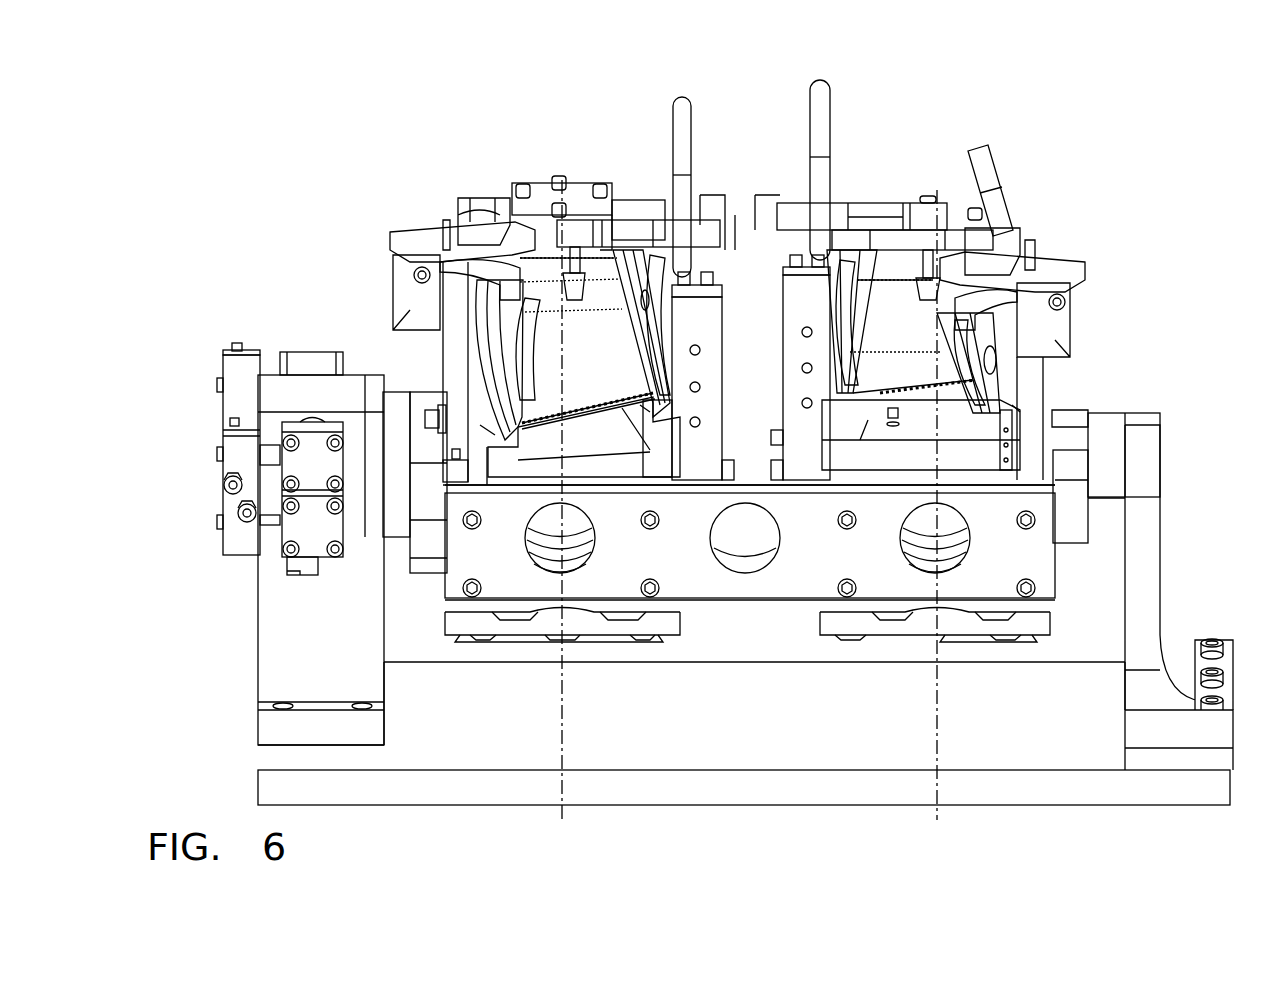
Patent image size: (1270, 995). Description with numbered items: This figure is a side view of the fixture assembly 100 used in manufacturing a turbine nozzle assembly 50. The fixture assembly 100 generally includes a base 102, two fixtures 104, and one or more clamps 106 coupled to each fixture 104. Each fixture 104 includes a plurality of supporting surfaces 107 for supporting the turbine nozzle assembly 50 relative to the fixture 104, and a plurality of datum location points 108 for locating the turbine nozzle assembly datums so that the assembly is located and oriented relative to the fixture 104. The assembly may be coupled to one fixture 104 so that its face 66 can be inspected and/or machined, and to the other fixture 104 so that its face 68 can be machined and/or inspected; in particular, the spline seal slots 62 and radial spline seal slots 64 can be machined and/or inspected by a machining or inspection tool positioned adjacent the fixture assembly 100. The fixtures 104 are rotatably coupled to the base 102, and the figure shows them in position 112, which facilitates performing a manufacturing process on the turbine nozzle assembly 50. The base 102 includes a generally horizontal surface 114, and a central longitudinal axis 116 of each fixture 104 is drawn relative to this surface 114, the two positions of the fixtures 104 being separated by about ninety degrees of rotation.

The turbine nozzle assembly 50 is at (870, 368).
The spline seal slots 62 is at (518, 358).
The radial spline seal slots 64 is at (530, 303).
The face 66 is at (520, 322).
The face 68 is at (812, 335).
The fixture assembly 100 is at (300, 130).
The base 102 is at (790, 805).
The fixture 104 is at (648, 192).
The clamp 106 is at (583, 208).
The supporting surfaces 107 is at (480, 425).
The datum location points 108 is at (500, 232).
The position 112 is at (801, 260).
The horizontal surface 114 is at (668, 725).
The central longitudinal axis 116 is at (562, 820).